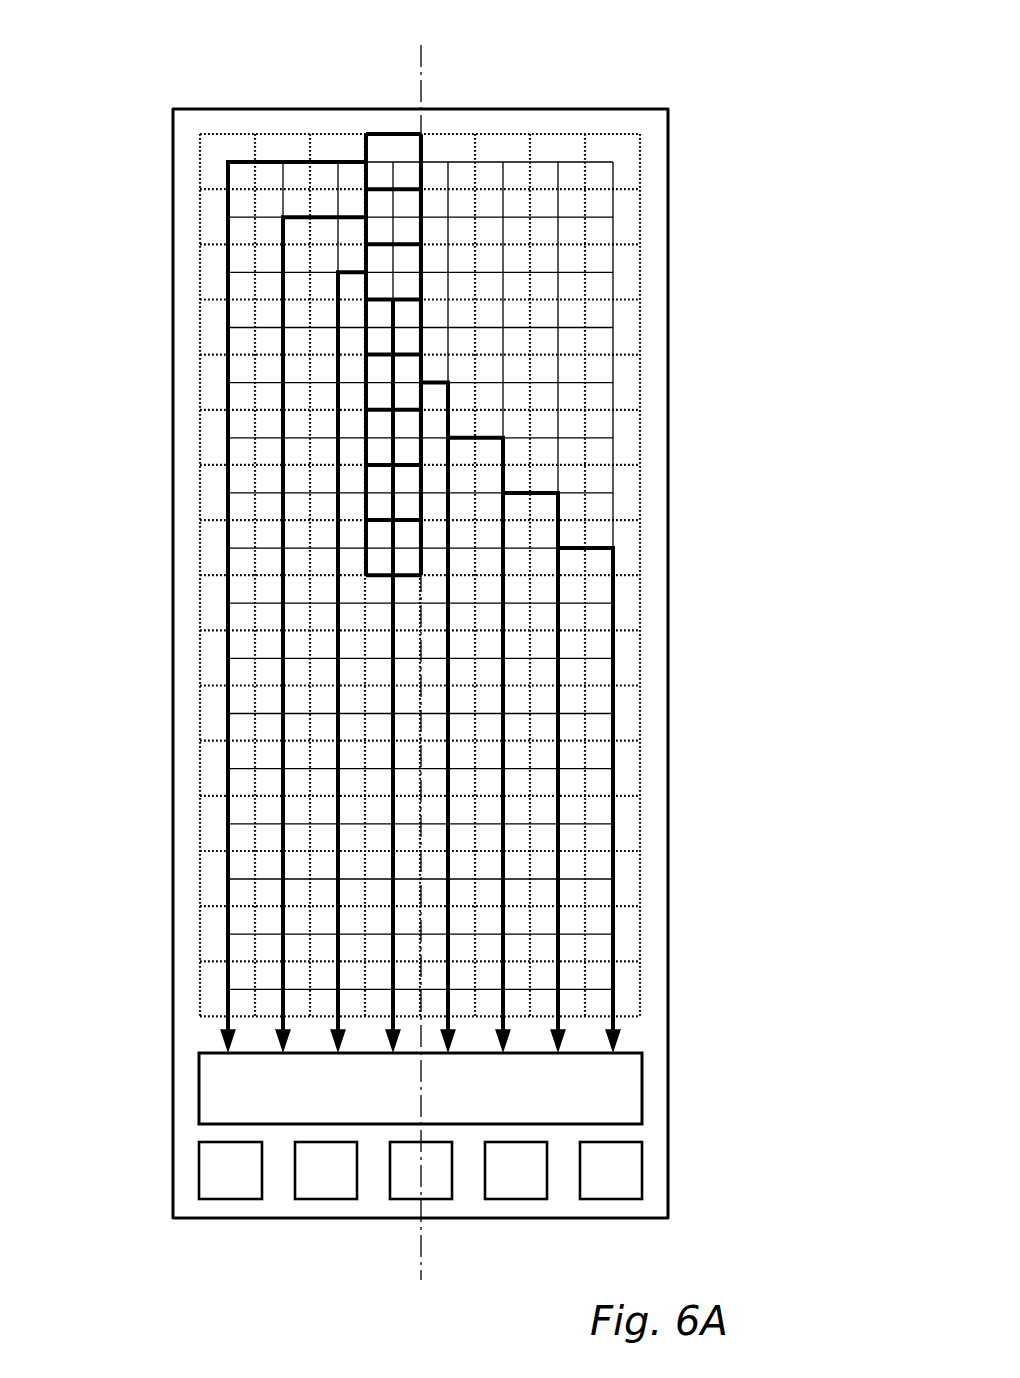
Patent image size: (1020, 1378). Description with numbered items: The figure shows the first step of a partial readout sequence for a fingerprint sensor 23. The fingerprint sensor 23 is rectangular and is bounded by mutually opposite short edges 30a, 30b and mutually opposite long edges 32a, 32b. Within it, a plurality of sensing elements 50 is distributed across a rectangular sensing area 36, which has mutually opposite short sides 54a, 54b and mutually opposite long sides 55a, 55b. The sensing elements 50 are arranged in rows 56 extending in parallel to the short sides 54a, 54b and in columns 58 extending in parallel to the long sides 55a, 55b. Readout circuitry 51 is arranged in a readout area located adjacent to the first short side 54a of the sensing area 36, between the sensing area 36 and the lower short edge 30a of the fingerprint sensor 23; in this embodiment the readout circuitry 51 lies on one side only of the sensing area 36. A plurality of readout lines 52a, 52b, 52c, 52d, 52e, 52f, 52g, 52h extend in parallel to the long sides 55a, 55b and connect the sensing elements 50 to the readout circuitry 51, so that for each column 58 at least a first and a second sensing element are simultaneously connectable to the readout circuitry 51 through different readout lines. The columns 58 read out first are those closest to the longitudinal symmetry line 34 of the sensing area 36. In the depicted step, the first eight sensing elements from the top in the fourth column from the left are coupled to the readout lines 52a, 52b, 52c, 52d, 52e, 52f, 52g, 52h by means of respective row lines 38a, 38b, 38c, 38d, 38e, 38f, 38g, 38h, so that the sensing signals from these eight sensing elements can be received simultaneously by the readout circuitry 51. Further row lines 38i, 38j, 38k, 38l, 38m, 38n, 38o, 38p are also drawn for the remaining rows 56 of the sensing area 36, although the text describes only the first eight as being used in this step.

The fingerprint sensor 23 is at (742, 120).
The lower short edge 30a is at (332, 1222).
The short edge 30b is at (448, 108).
The long edge 32a is at (173, 933).
The long edge 32b is at (668, 453).
The longitudinal symmetry line 34 is at (421, 1262).
The sensing area 36 is at (660, 737).
The row line 38a is at (245, 165).
The row line 38b is at (260, 218).
The row line 38c is at (260, 273).
The row line 38d is at (260, 328).
The row line 38e is at (260, 384).
The row line 38f is at (260, 439).
The row line 38g is at (260, 494).
The row line 38h is at (260, 549).
The row line 38i is at (600, 604).
The row line 38j is at (600, 659).
The row line 38k is at (600, 715).
The row line 38l is at (600, 770).
The row line 38m is at (600, 825).
The row line 38n is at (600, 880).
The row line 38o is at (600, 935).
The row line 38p is at (600, 990).
The sensing elements 50 is at (637, 315).
The readout circuitry 51 is at (593, 1092).
The readout line 52a is at (228, 190).
The readout line 52b is at (283, 181).
The readout line 52c is at (338, 181).
The readout line 52d is at (405, 177).
The readout line 52e is at (450, 205).
The readout line 52f is at (505, 205).
The readout line 52g is at (560, 207).
The readout line 52h is at (615, 230).
The first short side 54a is at (592, 1018).
The second short side 54b is at (600, 133).
The long side 55a is at (200, 668).
The long side 55b is at (643, 373).
The rows 56 is at (180, 718).
The columns 58 is at (322, 115).